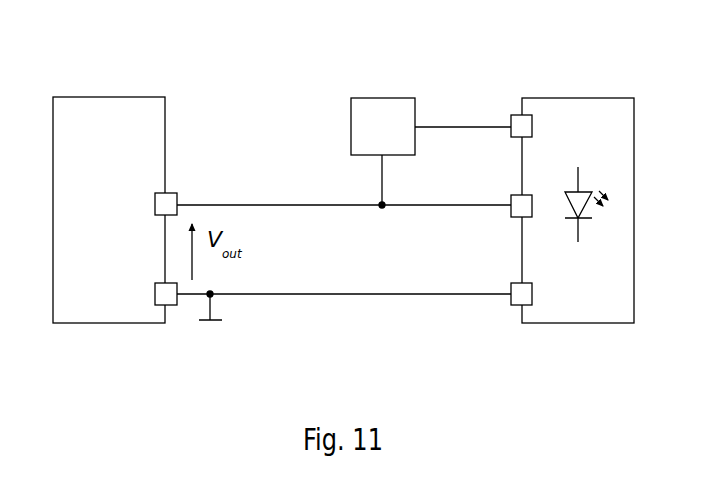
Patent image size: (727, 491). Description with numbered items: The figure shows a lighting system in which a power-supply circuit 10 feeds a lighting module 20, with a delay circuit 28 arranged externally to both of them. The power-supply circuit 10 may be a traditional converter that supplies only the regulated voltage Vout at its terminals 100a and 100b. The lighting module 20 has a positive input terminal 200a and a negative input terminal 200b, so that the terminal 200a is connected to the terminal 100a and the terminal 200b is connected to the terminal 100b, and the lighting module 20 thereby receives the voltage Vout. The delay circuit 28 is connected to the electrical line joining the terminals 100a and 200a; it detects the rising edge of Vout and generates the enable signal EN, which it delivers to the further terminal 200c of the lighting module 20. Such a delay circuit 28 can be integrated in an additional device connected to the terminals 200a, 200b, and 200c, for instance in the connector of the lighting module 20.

The power-supply circuit 10 is at (92, 108).
The lighting module 20 is at (578, 110).
The delay circuit 28 is at (388, 95).
The terminal of the electronic converter 100a is at (174, 187).
The terminal of the electronic converter 100b is at (170, 312).
The positive input terminal 200a is at (517, 191).
The negative input terminal 200b is at (512, 311).
The terminal of the lighting module 200c is at (517, 111).